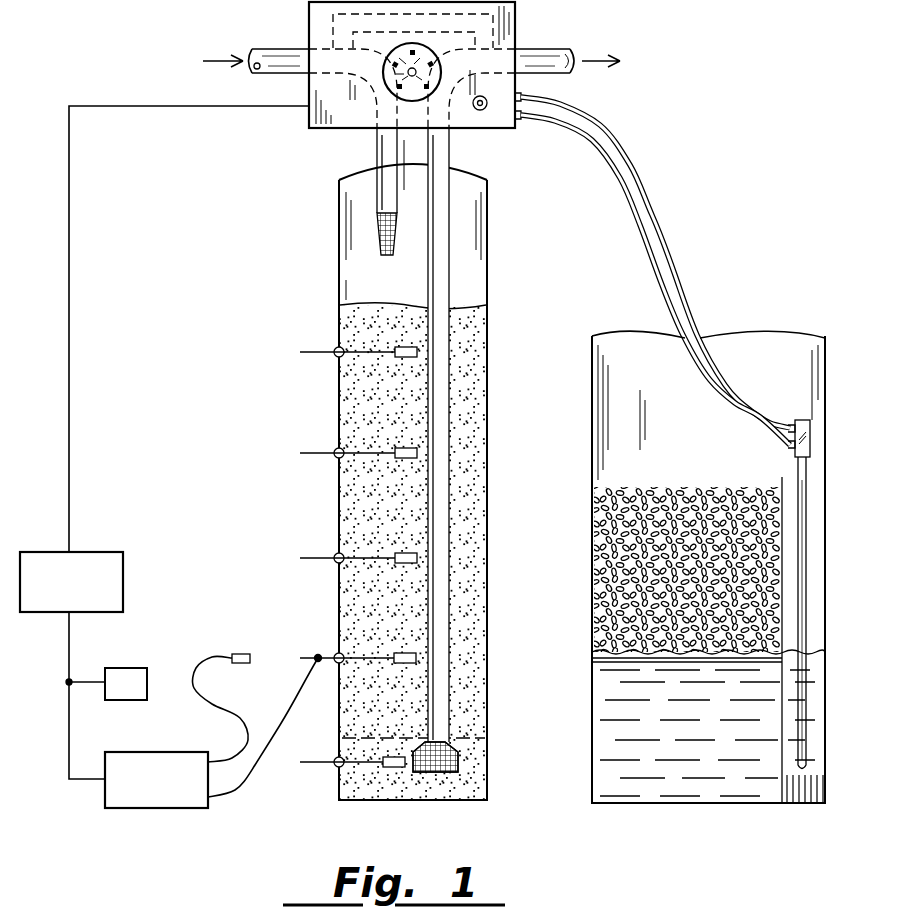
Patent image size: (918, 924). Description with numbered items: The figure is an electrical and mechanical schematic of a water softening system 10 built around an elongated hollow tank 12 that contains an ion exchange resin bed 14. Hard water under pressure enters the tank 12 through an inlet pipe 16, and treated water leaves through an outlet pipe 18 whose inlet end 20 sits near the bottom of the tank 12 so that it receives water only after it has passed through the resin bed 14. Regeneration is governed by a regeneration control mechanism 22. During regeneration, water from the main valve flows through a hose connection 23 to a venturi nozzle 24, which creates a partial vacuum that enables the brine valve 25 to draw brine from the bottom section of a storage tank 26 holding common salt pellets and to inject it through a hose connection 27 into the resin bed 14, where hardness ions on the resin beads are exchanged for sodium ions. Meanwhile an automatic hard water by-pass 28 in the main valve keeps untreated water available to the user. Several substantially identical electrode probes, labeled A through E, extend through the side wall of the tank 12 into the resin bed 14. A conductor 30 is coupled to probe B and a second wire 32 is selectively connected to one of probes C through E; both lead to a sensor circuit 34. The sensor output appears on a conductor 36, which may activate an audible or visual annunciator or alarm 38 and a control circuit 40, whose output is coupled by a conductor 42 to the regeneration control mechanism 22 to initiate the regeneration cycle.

The water softening system 10 is at (237, 390).
The elongated hollow tank 12 is at (339, 278).
The ion exchange resin bed 14 is at (375, 402).
The inlet pipe 16 is at (270, 47).
The outlet pipe 18 is at (560, 46).
The inlet end 20 is at (436, 742).
The regeneration control mechanism 22 is at (312, 126).
The hose connection 23 is at (650, 265).
The venturi nozzle 24 is at (810, 436).
The brine valve 25 is at (807, 524).
The storage tank 26 is at (827, 358).
The hose connection 27 is at (655, 215).
The automatic hard water by-pass 28 is at (493, 30).
The conductor 30 is at (235, 791).
The second wire 32 is at (215, 701).
The sensor circuit 34 is at (160, 808).
The conductor 36 is at (85, 780).
The audible or visual annunciator or alarm 38 is at (128, 668).
The control circuit 40 is at (101, 552).
The conductor 42 is at (69, 290).